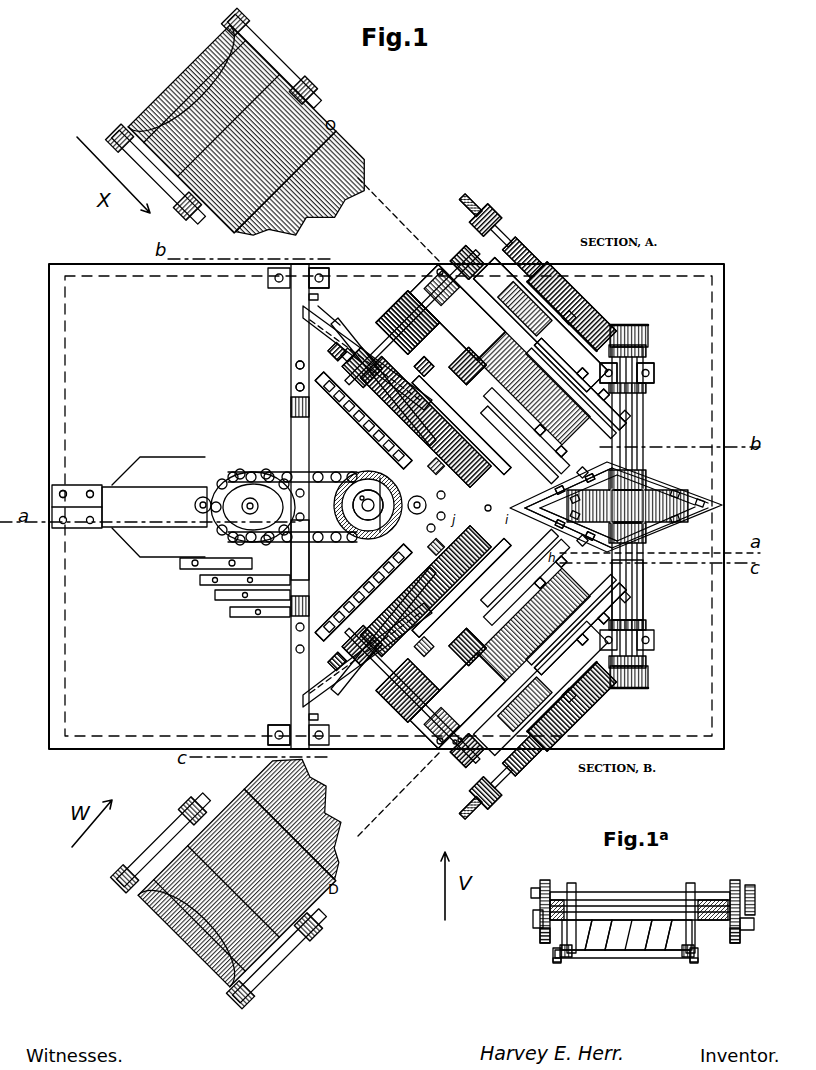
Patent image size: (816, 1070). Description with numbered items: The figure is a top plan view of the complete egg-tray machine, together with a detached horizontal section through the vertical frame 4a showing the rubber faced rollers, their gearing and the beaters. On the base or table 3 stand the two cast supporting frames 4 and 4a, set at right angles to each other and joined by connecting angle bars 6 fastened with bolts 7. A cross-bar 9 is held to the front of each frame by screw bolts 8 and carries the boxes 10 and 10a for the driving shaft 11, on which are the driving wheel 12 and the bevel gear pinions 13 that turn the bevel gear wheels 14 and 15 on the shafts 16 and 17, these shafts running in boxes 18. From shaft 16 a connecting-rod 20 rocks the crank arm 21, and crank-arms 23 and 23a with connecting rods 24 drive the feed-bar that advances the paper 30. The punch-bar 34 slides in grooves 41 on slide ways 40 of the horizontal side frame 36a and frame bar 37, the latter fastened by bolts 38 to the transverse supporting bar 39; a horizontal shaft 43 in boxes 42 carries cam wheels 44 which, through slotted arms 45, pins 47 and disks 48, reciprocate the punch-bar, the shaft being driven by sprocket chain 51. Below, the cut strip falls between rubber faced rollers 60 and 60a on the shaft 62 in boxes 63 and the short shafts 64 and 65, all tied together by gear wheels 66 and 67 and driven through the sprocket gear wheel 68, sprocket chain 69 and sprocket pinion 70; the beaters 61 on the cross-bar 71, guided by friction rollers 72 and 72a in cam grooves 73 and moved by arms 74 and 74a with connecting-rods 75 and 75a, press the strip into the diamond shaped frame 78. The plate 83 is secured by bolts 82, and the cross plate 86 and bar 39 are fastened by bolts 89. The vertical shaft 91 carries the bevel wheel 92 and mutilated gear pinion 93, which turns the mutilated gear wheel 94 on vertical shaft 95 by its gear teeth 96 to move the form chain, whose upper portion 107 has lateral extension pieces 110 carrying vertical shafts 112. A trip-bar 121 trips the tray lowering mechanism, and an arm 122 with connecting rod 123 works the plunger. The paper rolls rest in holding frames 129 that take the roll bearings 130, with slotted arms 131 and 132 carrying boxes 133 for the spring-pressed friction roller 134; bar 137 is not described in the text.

In FIG. 1, the base or table 3 is at (100, 628).
In FIG. 1, the supporting frame 4 is at (535, 700).
In FIG. 1, the vertical frame 4a is at (535, 315).
In FIG. 1, the connecting angle bar 6 is at (355, 505).
In FIG. 1, the bolt 7 is at (385, 458).
In FIG. 1, the screw bolt 8 is at (588, 380).
In FIG. 1, the cross-bar 9 is at (645, 430).
In FIG. 1, the box 10 is at (655, 370).
In FIG. 1, the box 10a is at (655, 640).
In FIG. 1, the driving shaft 11 is at (640, 580).
In FIG. 1, the driving wheel 12 is at (655, 512).
In FIG. 1, the bevel gear pinion 13 is at (628, 326).
In FIG. 1, the bevel gear wheel 14 is at (572, 300).
In FIG. 1, the bevel gear wheel 15 is at (600, 690).
In FIG. 1, the shaft 16 is at (457, 312).
In FIG. 1, the shaft 17 is at (478, 650).
In FIG. 1, the box 18 is at (402, 415).
In FIG. 1, the connecting-rod 20 is at (462, 362).
In FIG. 1, the crank arm 21 is at (468, 386).
In FIG. 1, the crank-arm 23 is at (564, 472).
In FIG. 1, the crank-arm 23a is at (570, 450).
In FIG. 1, the connecting rod 24 is at (580, 384).
In FIG. 1, the paper 30 is at (258, 48).
In FIG. 1, the punch-bar 34 is at (420, 322).
In FIG. 1, the horizontal side frame 36a is at (470, 262).
In FIG. 1, the horizontal frame bar 37 is at (352, 350).
In FIG. 1, the bolt 38 is at (318, 297).
In FIG. 1, the transverse supporting bar 39 is at (292, 673).
In FIG. 1, the slide way 40 is at (433, 268).
In FIG. 1, the groove 41 is at (440, 269).
In FIG. 1, the box 42 is at (466, 268).
In FIG. 1, the horizontal shaft 43 is at (455, 345).
In FIG. 1, the cam wheel 44 is at (437, 282).
In FIG. 1, the slotted arm 45 is at (433, 275).
In FIG. 1, the pin 47 is at (434, 382).
In FIG. 1, the circular disk 48 is at (358, 356).
In FIG. 1, the sprocket chain 51 is at (348, 440).
In FIG. 1A, the rubber faced roller 60 is at (573, 884).
In FIG. 1A, the rubber faced roller 60a is at (568, 958).
In FIG. 1A, the beater 61 is at (618, 955).
In FIG. 1A, the shaft 62 is at (620, 893).
In FIG. 1A, the box 63 is at (558, 895).
In FIG. 1A, the short shaft 64 is at (754, 924).
In FIG. 1A, the shaft 65 is at (533, 918).
In FIG. 1A, the gear wheel 66 is at (540, 884).
In FIG. 1, the gear wheel 67 is at (588, 345).
In FIG. 1A, the gear wheel 67 is at (542, 940).
In FIG. 1, the sprocket gear wheel 68 is at (518, 245).
In FIG. 1, the sprocket chain 69 is at (470, 220).
In FIG. 1A, the sprocket pinion 70 is at (755, 902).
In FIG. 1, the cross-bar 71 is at (560, 452).
In FIG. 1A, the cross-bar 71 is at (645, 958).
In FIG. 1, the friction roller 72 is at (465, 470).
In FIG. 1A, the friction roller 72 is at (553, 955).
In FIG. 1A, the friction roller 72a is at (698, 955).
In FIG. 1, the cam groove 73 is at (603, 330).
In FIG. 1A, the cam groove 73 is at (557, 963).
In FIG. 1, the arm 74 is at (495, 502).
In FIG. 1, the arm 74a is at (590, 405).
In FIG. 1, the connecting-rod 75 is at (572, 400).
In FIG. 1, the connecting-rod 75a is at (545, 480).
In FIG. 1, the diamond shaped frame 78 is at (510, 305).
In FIG. 1, the bolt 82 is at (95, 486).
In FIG. 1, the plate 83 is at (72, 486).
In FIG. 1, the cross plate 86 is at (268, 470).
In FIG. 1, the bolt 89 is at (319, 268).
In FIG. 1, the vertical shaft 91 is at (300, 560).
In FIG. 1, the bevel wheel 92 is at (362, 508).
In FIG. 1, the mutilated gear pinion 93 is at (448, 508).
In FIG. 1, the mutilated gear wheel 94 is at (426, 505).
In FIG. 1, the vertical shaft 95 is at (369, 505).
In FIG. 1, the gear teeth 96 is at (369, 497).
In FIG. 1, the upper portion of sprocket chain 107 is at (222, 558).
In FIG. 1, the lateral extension piece 110 is at (292, 470).
In FIG. 1, the vertical shaft 112 is at (203, 495).
In FIG. 1, the trip-bar 121 is at (270, 584).
In FIG. 1, the arm 122 is at (295, 363).
In FIG. 1, the connecting rod 123 is at (295, 387).
In FIG. 1, the holding frame 129 is at (197, 208).
In FIG. 1, the roll bearing 130 is at (315, 82).
In FIG. 1, the slotted arm 131 is at (290, 58).
In FIG. 1, the slotted arm 132 is at (165, 190).
In FIG. 1, the box 133 is at (237, 19).
In FIG. 1, the friction roller 134 is at (120, 128).
In FIG. 1, the bar 137 is at (285, 600).